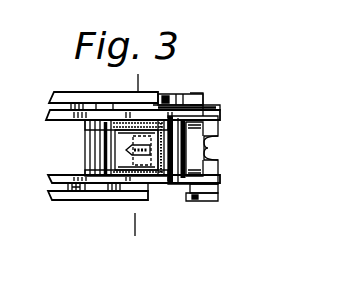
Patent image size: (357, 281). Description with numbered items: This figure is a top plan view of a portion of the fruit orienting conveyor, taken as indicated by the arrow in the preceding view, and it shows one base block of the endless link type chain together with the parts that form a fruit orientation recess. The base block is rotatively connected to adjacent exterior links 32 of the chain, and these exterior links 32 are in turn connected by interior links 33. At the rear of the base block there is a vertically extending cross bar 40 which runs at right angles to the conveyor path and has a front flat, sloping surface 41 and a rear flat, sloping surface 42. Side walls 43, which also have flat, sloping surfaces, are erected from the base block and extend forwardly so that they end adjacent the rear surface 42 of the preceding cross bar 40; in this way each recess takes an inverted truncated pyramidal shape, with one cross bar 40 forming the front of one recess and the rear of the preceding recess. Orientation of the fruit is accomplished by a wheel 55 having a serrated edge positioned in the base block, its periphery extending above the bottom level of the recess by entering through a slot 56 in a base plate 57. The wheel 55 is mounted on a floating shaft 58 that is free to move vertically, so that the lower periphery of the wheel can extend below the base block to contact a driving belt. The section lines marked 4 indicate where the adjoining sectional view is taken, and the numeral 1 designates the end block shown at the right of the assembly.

The end block 1 is at (205, 128).
The section line 4 is at (119, 80).
The exterior links 32 is at (210, 112).
The interior links 33 is at (183, 101).
The cross bar 40 is at (178, 172).
The front sloping surface 41 is at (198, 154).
The rear sloping surface 42 is at (166, 176).
The side walls 43 is at (147, 117).
The wheel 55 is at (118, 143).
The slot 56 is at (90, 114).
The base plate 57 is at (112, 131).
The floating shaft 58 is at (136, 193).